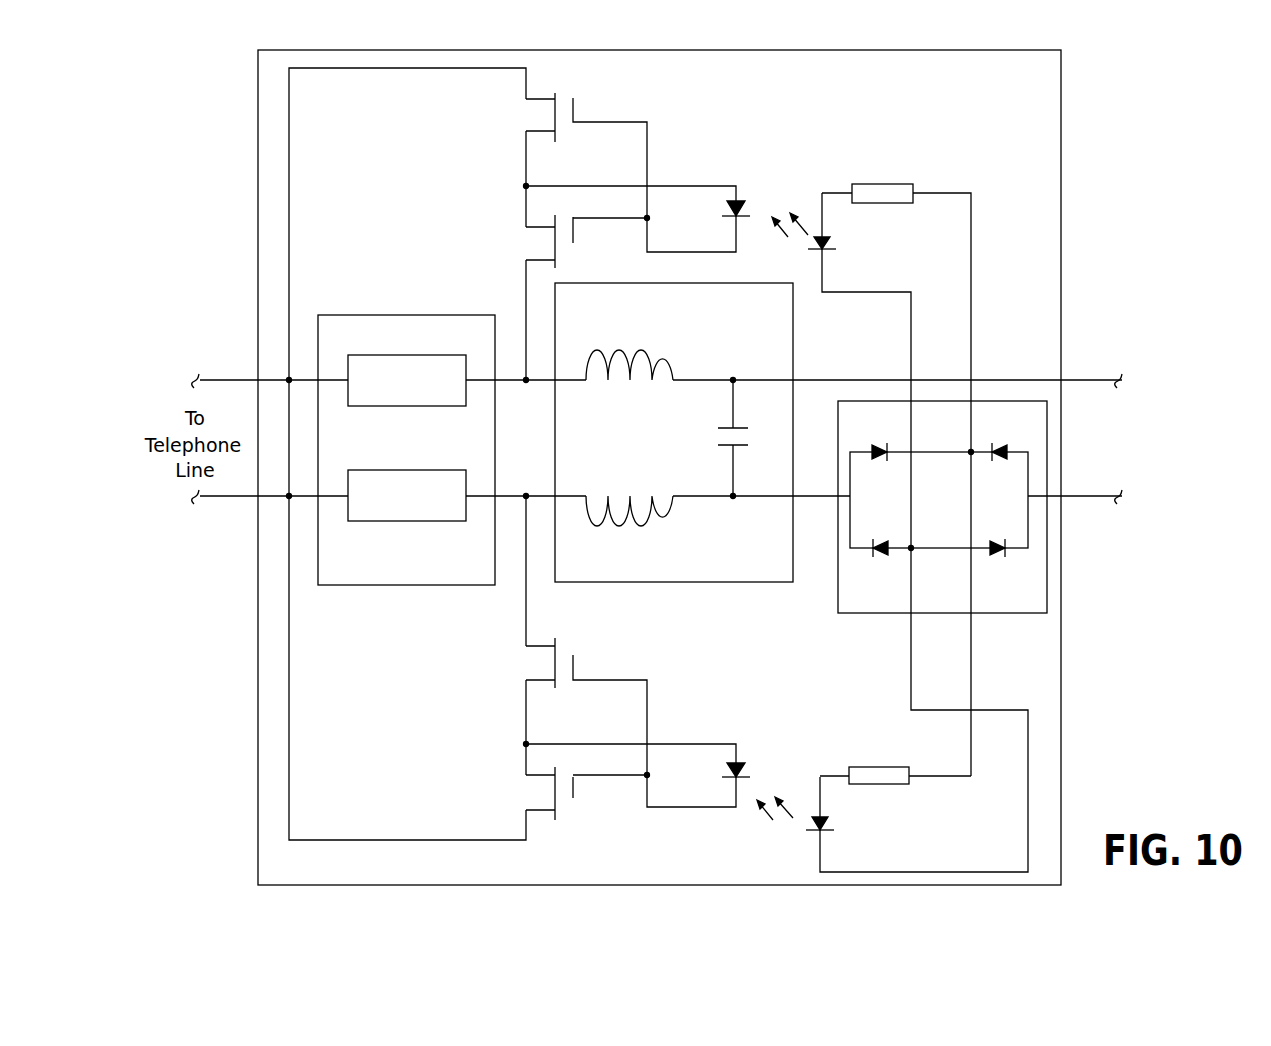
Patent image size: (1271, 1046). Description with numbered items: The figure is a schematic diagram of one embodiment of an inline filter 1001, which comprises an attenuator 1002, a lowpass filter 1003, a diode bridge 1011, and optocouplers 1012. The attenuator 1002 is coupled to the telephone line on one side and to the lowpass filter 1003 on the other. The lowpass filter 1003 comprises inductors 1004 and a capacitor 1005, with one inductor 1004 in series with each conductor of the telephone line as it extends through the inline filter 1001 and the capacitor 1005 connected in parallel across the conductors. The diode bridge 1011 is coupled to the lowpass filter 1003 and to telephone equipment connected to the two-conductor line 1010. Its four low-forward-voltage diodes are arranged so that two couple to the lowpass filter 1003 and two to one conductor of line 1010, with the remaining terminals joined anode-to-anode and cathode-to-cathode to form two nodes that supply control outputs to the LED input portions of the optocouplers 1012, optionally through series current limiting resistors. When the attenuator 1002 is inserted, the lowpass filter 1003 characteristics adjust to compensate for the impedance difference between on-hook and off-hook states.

The inline filter 1001 is at (236, 154).
The attenuator 1002 is at (313, 458).
The lowpass filter 1003 is at (706, 432).
The inductor 1004 is at (643, 346).
The capacitor 1005 is at (706, 419).
The line 1010 is at (1094, 372).
The diode bridge 1011 is at (979, 616).
The optocoupler 1012 is at (597, 113).